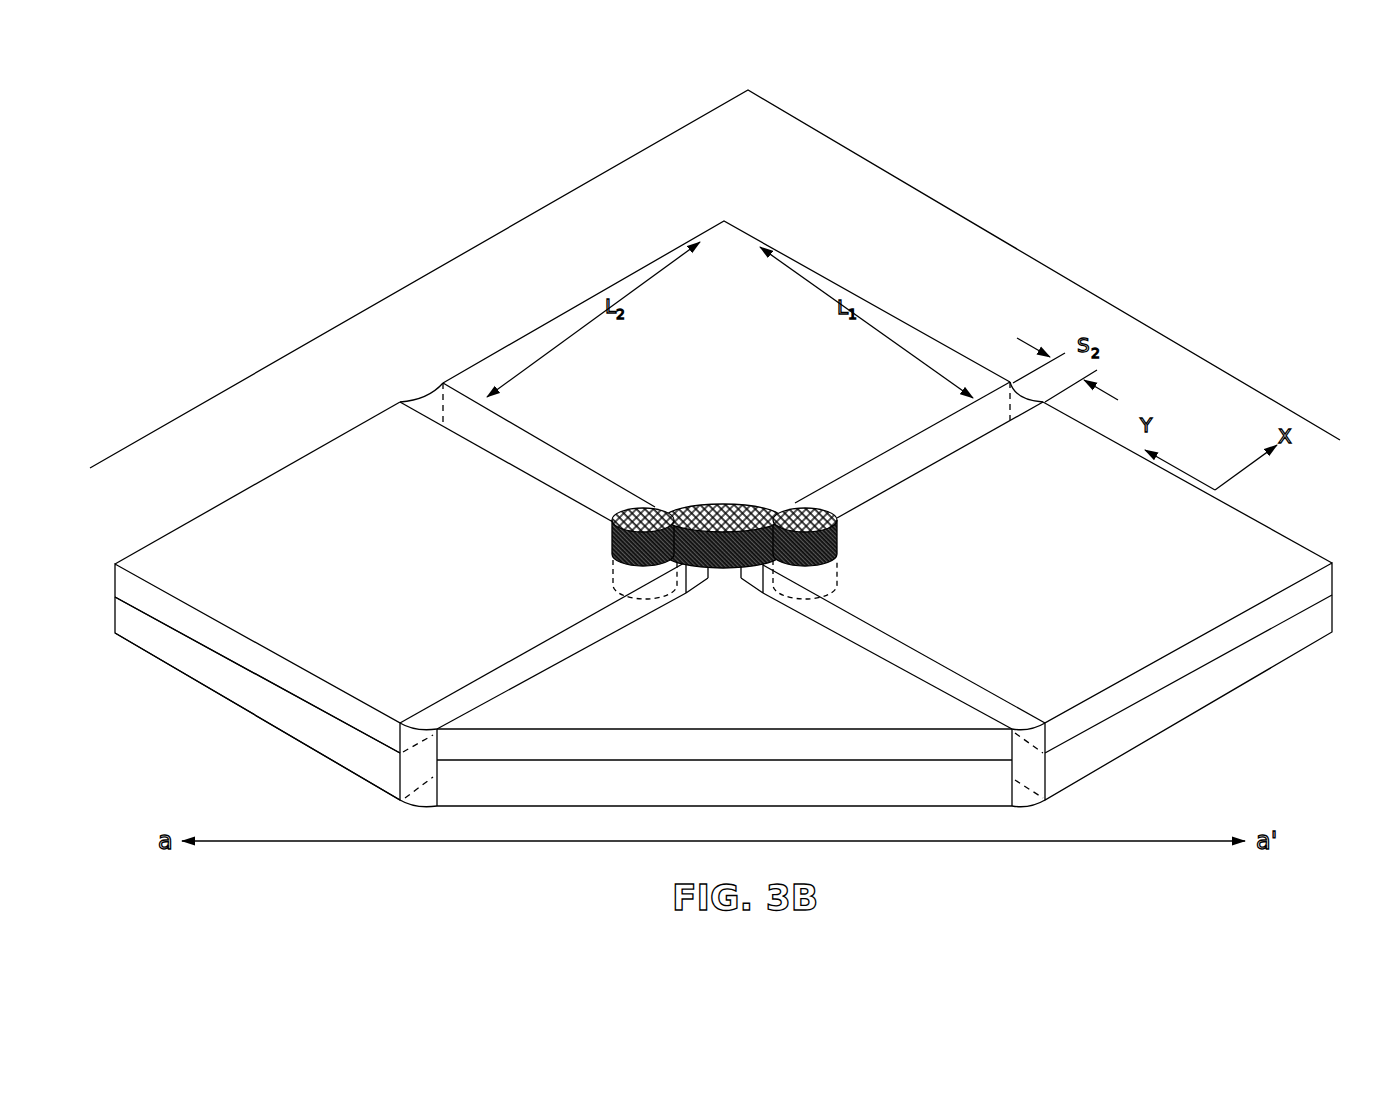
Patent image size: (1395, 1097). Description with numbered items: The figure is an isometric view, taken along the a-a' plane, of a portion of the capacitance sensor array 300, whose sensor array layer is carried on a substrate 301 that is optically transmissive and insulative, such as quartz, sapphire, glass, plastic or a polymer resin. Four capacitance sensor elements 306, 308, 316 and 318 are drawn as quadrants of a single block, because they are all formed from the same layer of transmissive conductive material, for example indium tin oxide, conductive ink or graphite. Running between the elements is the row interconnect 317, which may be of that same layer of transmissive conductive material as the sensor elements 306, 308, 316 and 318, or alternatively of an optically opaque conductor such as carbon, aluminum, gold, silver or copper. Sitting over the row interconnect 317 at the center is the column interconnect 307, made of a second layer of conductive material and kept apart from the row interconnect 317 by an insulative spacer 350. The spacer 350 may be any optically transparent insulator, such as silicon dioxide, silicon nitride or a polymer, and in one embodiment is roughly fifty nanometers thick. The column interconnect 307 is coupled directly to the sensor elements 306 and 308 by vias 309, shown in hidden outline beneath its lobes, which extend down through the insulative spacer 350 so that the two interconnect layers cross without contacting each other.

The sensor array 300 is at (331, 364).
The substrate 301 is at (186, 412).
The sensor element 306 is at (1047, 562).
The column interconnect 307 is at (660, 505).
The sensor element 308 is at (400, 562).
The vias 309 is at (628, 572).
The sensor element 316 is at (724, 699).
The row interconnect 317 is at (732, 573).
The sensor element 318 is at (726, 364).
The insulative spacer 350 is at (168, 613).